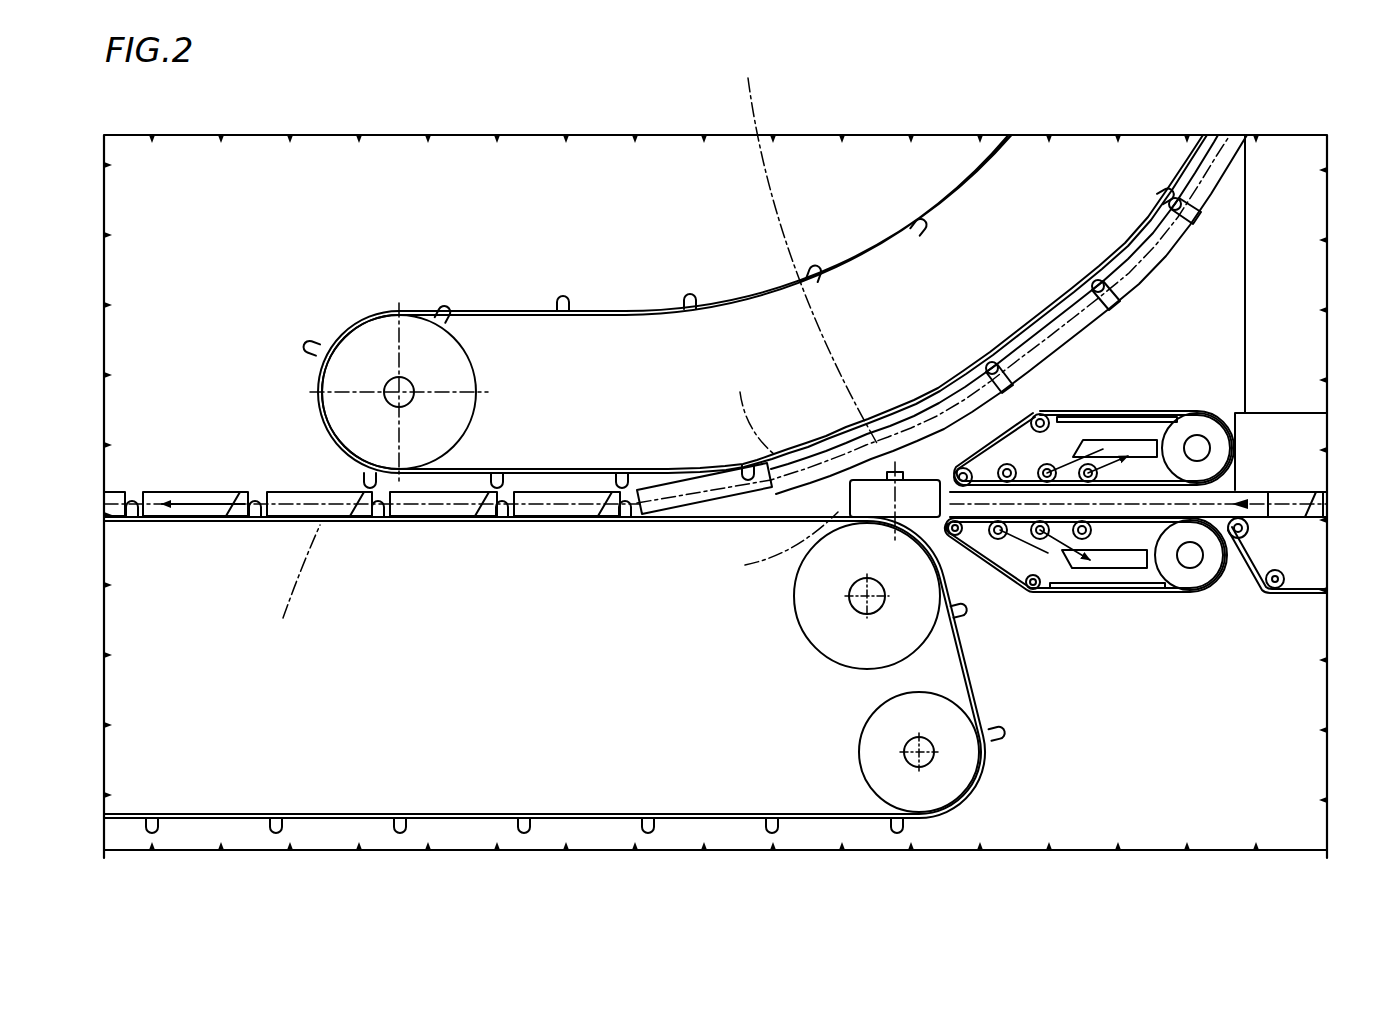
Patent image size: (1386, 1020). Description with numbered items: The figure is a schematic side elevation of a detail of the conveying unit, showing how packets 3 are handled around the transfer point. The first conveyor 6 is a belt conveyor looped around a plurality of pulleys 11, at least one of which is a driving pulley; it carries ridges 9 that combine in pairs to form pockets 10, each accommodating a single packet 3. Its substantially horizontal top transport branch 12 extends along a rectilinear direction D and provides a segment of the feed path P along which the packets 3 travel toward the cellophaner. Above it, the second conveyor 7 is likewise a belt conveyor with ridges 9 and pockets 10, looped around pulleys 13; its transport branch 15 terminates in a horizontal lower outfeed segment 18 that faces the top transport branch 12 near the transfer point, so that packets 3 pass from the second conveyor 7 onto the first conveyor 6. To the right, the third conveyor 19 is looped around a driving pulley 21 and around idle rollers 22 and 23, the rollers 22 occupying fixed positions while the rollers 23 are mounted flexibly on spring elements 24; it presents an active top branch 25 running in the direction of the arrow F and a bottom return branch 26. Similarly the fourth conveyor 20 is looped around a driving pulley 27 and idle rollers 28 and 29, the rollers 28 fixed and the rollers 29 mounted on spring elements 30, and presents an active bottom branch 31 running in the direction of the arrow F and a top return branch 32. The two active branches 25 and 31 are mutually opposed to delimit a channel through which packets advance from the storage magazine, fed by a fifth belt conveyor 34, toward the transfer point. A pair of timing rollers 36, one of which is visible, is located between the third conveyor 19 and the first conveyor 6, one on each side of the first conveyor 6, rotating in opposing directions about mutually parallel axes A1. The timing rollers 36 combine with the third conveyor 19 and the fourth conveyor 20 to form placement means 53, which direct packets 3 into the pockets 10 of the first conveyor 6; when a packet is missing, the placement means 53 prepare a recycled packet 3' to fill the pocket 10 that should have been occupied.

The packets 3 is at (713, 290).
The recycled packet 3' is at (942, 296).
The first conveyor 6 is at (994, 768).
The second conveyor 7 is at (732, 296).
The ridges 9 is at (437, 297).
The pockets 10 is at (492, 298).
The pulleys 11 is at (865, 728).
The top transport branch 12 is at (505, 522).
The pulleys 13 is at (366, 340).
The transport branch 15 is at (1090, 274).
The horizontal lower outfeed segment 18 is at (550, 465).
The third conveyor 19 is at (1178, 596).
The fourth conveyor 20 is at (1150, 409).
The driving pulley 21 is at (1222, 584).
The idle rollers 22 is at (962, 538).
The idle rollers 23 is at (999, 542).
The spring elements 24 is at (1044, 542).
The active top branch 25 is at (1152, 524).
The bottom return branch 26 is at (1138, 597).
The driving pulley 27 is at (1218, 440).
The idle rollers 28 is at (962, 467).
The idle rollers 29 is at (1052, 464).
The spring elements 30 is at (1020, 462).
The active bottom branch 31 is at (1160, 486).
The top return branch 32 is at (1182, 409).
The fifth belt conveyor 34 is at (1312, 598).
The timing rollers 36 is at (906, 464).
The placement means 53 is at (889, 474).
The axes A1 is at (807, 243).
The feed path P is at (520, 506).
The rectilinear direction D is at (777, 546).
The arrow F is at (1302, 504).